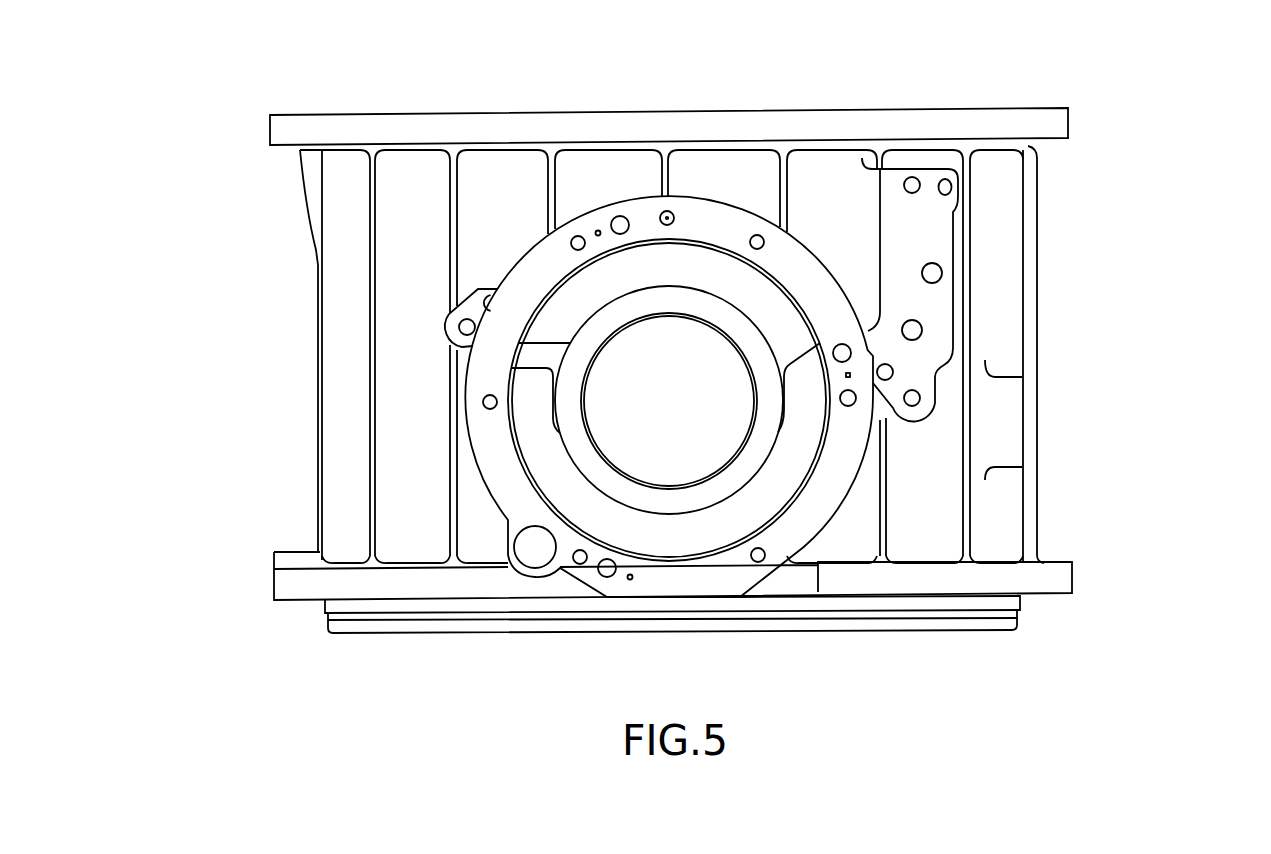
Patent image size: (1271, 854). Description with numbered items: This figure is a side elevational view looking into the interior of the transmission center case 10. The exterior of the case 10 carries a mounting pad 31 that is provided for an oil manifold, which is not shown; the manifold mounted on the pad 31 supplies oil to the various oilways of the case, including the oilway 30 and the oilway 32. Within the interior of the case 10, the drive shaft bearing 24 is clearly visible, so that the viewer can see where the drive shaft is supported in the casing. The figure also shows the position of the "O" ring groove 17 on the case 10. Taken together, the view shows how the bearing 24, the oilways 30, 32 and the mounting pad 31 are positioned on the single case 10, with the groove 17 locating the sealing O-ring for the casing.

The case 10 is at (262, 397).
The "O" ring groove 17 is at (340, 618).
The drive shaft bearing 24 is at (755, 375).
The oilway 30 is at (527, 550).
The mounting pad 31 is at (925, 240).
The oilway 32 is at (460, 322).